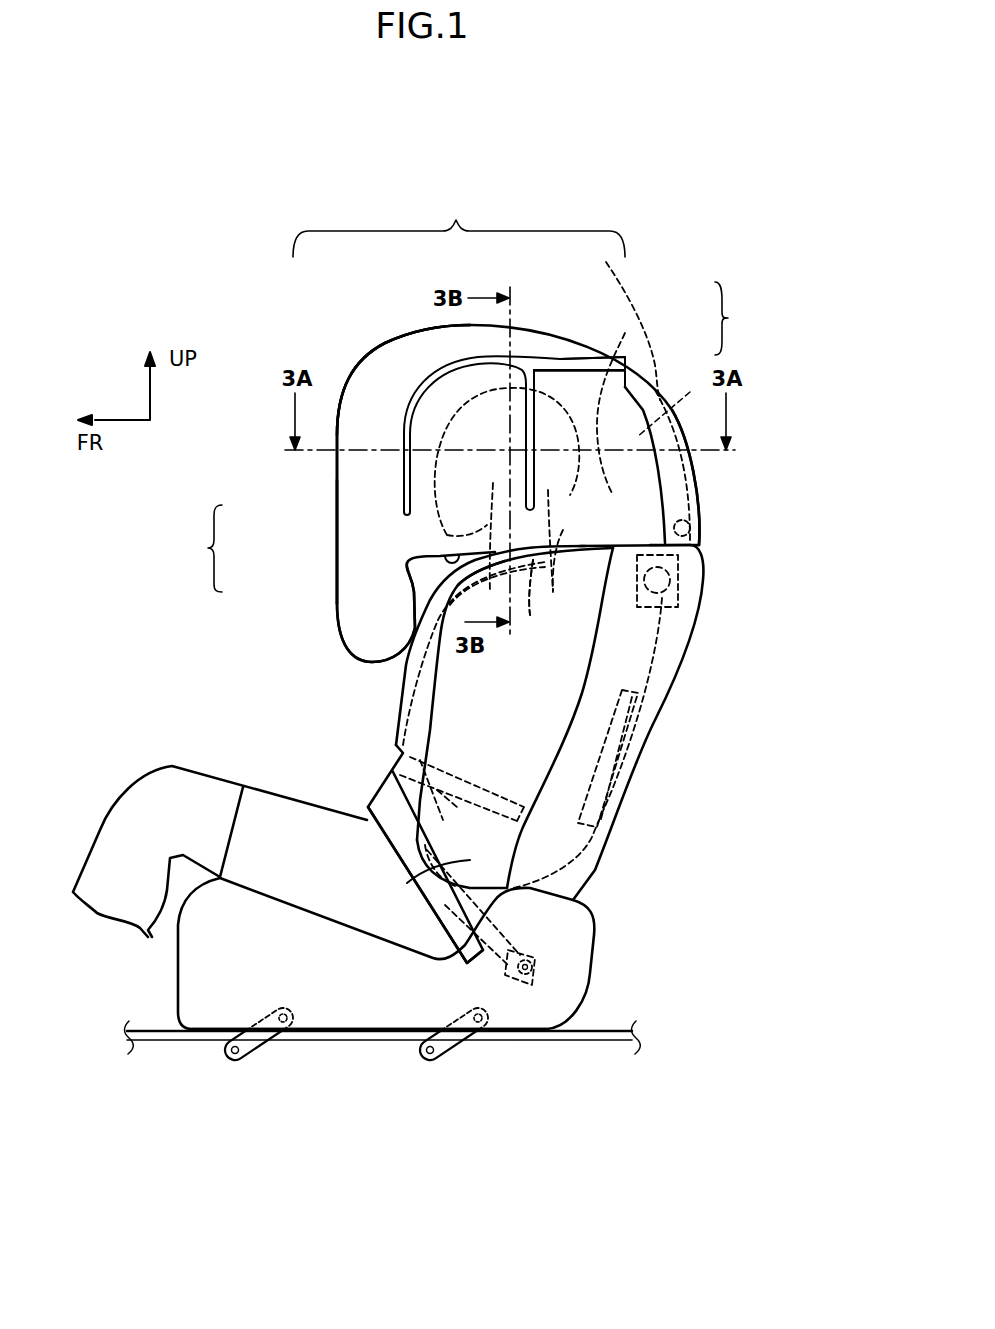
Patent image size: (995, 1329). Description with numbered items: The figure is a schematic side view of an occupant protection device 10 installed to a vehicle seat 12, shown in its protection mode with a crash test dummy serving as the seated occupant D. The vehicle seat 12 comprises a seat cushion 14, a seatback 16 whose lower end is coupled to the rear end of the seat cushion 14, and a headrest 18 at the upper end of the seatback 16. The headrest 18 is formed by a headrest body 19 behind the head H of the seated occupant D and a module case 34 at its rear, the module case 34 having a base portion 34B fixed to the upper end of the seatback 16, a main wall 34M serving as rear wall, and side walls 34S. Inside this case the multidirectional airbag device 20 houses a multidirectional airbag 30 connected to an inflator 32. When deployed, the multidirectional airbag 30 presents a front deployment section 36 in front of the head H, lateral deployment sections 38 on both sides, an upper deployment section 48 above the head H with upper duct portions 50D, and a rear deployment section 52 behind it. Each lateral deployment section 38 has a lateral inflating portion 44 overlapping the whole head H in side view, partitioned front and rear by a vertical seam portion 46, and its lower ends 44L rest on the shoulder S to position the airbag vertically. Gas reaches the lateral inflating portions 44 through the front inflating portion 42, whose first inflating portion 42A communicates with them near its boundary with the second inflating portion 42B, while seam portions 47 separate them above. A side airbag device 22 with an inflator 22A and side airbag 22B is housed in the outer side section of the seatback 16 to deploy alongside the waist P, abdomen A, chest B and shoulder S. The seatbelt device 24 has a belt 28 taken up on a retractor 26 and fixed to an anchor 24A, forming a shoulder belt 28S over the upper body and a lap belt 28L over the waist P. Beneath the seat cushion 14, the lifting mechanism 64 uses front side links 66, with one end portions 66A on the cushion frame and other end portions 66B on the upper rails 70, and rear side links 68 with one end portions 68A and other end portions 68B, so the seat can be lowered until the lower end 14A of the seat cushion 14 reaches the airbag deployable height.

The occupant protection device 10 is at (258, 622).
The vehicle seat 12 is at (629, 852).
The seat cushion 14 is at (195, 986).
The lower end of the seat cushion 14A is at (390, 1034).
The seatback 16 is at (663, 670).
The headrest 18 is at (735, 318).
The headrest body 19 is at (690, 392).
The multidirectional airbag device 20 is at (660, 290).
The side airbag device 22 is at (410, 707).
The inflator 22A is at (598, 770).
The side airbag 22B is at (419, 696).
The seatbelt device 24 is at (360, 783).
The anchor 24A is at (538, 963).
The retractor 26 is at (681, 592).
The belt 28 is at (394, 660).
The lap belt 28L is at (395, 830).
The shoulder belt 28S is at (543, 614).
The multidirectional airbag 30 is at (459, 224).
The inflator 32 is at (691, 528).
The module case 34 is at (672, 385).
The base portion 34B is at (688, 548).
The main wall 34M is at (705, 487).
The side walls 34S is at (680, 470).
The front deployment section 36 is at (365, 420).
The lateral deployment sections 38 is at (438, 400).
The front inflating portion 42 is at (201, 548).
The first inflating portion 42A is at (343, 503).
The second inflating portion 42B is at (348, 588).
The lateral inflating portion 44 is at (337, 462).
The lower ends of the lateral inflating portions 44L is at (447, 556).
The seam portion 46 is at (525, 422).
The seam portions 47 is at (408, 420).
The upper deployment section 48 is at (530, 345).
The upper duct portions 50D is at (553, 340).
The rear deployment section 52 is at (618, 318).
The lifting mechanism 64 is at (334, 1047).
The front side links 66 is at (265, 1052).
The one end portions of the front side links 66A is at (283, 1012).
The other end portions of the front side links 66B is at (231, 1056).
The rear side links 68 is at (471, 1050).
The one end portions of the rear side links 68A is at (472, 1013).
The other end portions of the rear side links 68B is at (428, 1056).
The upper rails 70 is at (593, 1036).
The abdomen A is at (408, 723).
The chest B is at (420, 620).
The seated occupant (crash test dummy) D is at (261, 773).
The head H is at (532, 451).
The waist P is at (407, 883).
The shoulder S is at (570, 533).